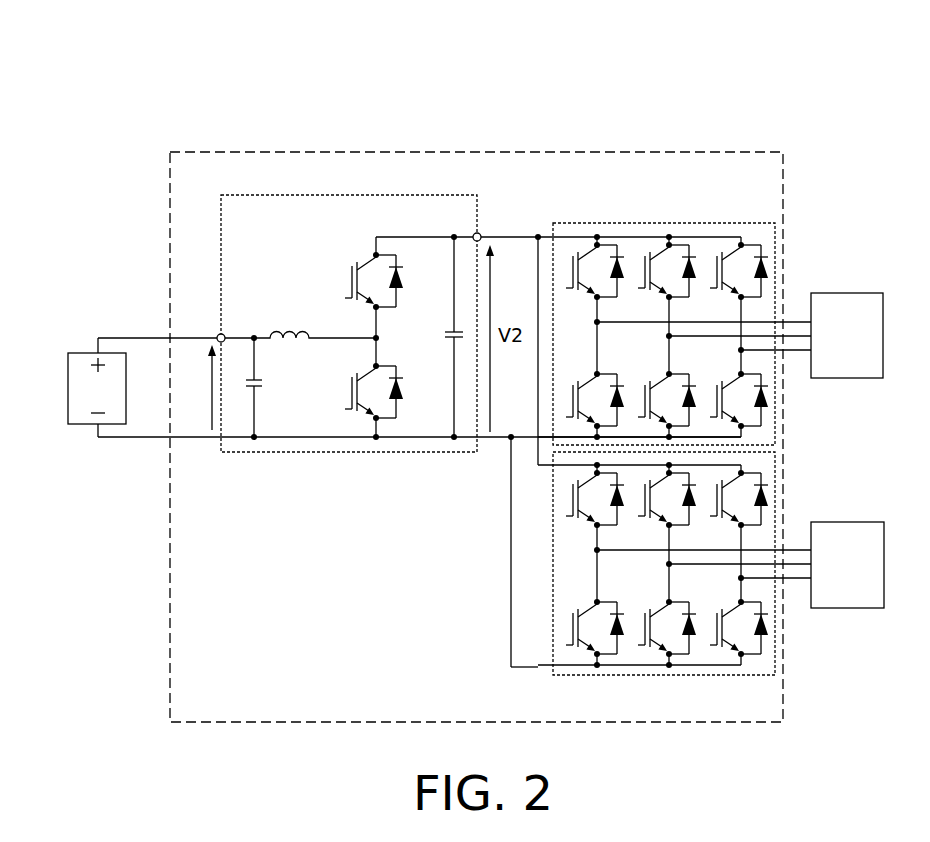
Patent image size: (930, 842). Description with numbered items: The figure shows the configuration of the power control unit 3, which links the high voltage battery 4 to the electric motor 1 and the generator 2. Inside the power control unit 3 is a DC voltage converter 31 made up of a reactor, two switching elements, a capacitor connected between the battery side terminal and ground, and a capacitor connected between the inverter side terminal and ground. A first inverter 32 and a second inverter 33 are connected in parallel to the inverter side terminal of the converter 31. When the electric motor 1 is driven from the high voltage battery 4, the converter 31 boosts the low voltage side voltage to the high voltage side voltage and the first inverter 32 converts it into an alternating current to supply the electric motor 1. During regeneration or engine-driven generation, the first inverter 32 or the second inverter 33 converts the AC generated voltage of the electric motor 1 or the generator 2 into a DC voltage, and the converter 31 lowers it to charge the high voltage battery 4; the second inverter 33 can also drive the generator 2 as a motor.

The electric motor 1 is at (820, 293).
The generator 2 is at (820, 522).
The power control unit 3 is at (482, 153).
The high voltage battery 4 is at (80, 353).
The DC voltage converter 31 is at (343, 195).
The first inverter 32 is at (648, 223).
The second inverter 33 is at (655, 675).